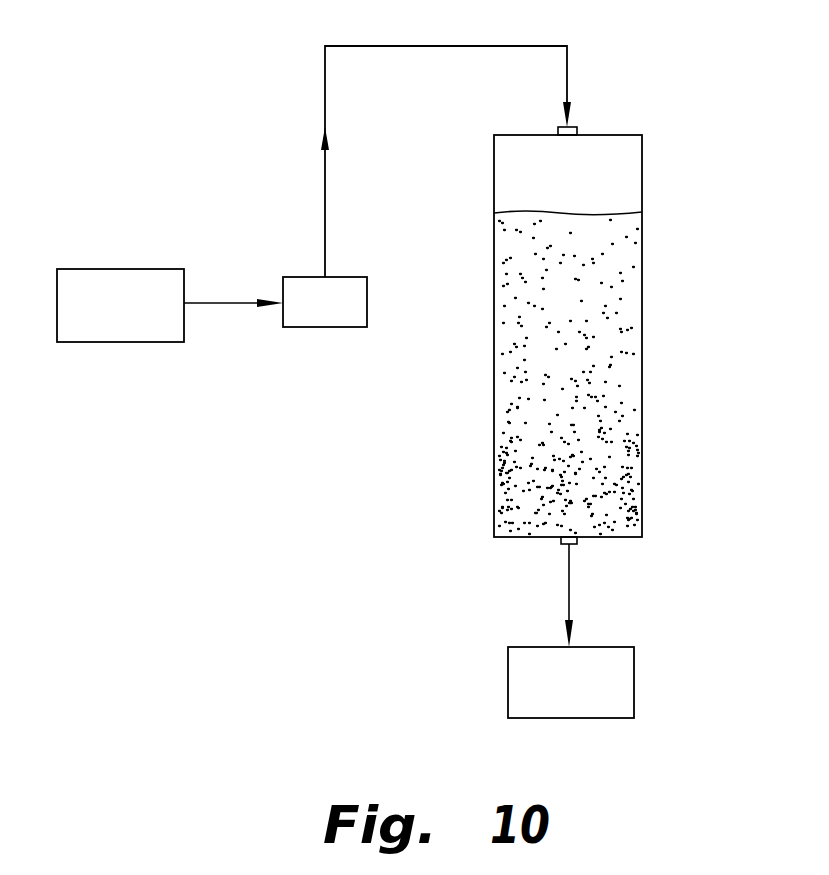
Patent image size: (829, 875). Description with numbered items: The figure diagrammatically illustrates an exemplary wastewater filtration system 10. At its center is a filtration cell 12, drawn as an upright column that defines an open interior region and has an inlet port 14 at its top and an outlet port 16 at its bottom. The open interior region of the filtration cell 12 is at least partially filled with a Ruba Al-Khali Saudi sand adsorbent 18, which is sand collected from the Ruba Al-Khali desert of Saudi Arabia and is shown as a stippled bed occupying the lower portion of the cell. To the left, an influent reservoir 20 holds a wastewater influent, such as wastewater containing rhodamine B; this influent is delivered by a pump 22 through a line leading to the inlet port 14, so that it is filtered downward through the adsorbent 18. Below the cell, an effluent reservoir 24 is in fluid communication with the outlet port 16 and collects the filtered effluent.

The wastewater filtration system 10 is at (213, 65).
The filtration cell 12 is at (642, 177).
The inlet port 14 is at (577, 126).
The outlet port 16 is at (577, 542).
The Ruba Al-Khali Saudi sand adsorbent 18 is at (597, 382).
The influent reservoir 20 is at (132, 269).
The pump 22 is at (305, 277).
The effluent reservoir 24 is at (634, 675).